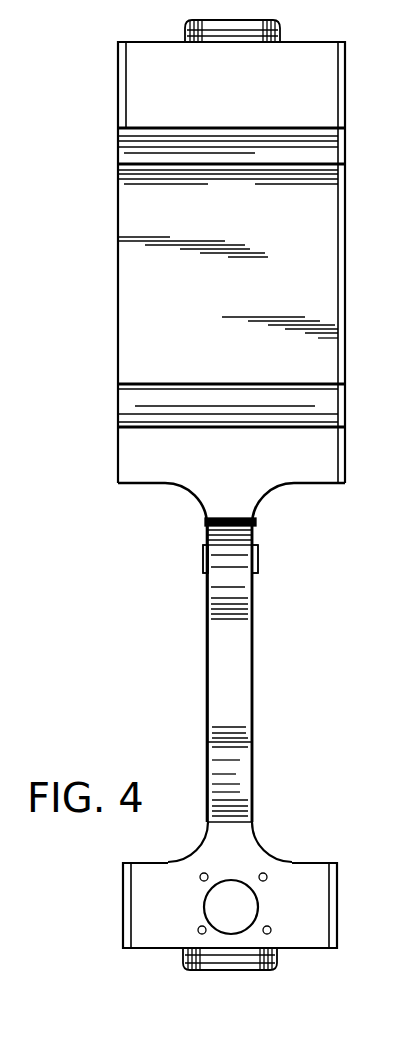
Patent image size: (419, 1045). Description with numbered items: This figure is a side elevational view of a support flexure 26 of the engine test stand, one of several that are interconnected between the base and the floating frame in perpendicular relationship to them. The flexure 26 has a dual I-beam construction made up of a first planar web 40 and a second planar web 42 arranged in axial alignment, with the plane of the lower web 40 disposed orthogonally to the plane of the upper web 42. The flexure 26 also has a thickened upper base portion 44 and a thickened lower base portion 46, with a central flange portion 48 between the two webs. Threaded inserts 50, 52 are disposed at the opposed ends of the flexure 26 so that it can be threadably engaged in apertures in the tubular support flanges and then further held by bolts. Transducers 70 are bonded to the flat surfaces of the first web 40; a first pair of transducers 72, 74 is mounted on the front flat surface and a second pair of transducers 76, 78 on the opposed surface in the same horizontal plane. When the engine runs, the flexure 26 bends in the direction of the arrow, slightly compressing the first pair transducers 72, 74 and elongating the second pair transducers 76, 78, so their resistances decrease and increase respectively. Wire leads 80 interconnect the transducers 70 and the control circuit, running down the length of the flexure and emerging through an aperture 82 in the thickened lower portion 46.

The support flexure 26 is at (60, 260).
The first planar web 40 is at (218, 671).
The second planar web 42 is at (128, 294).
The upper base portion 44 is at (152, 95).
The lower base portion 46 is at (143, 910).
The central flange portion 48 is at (125, 455).
The threaded insert 50 is at (200, 965).
The threaded insert 52 is at (185, 31).
The transducer 70 is at (265, 546).
The first pair transducer 72 is at (198, 564).
The first pair transducer 74 is at (205, 559).
The second pair transducer 76 is at (266, 560).
The second pair transducer 78 is at (255, 559).
The wire leads 80 is at (222, 540).
The aperture 82 is at (250, 905).